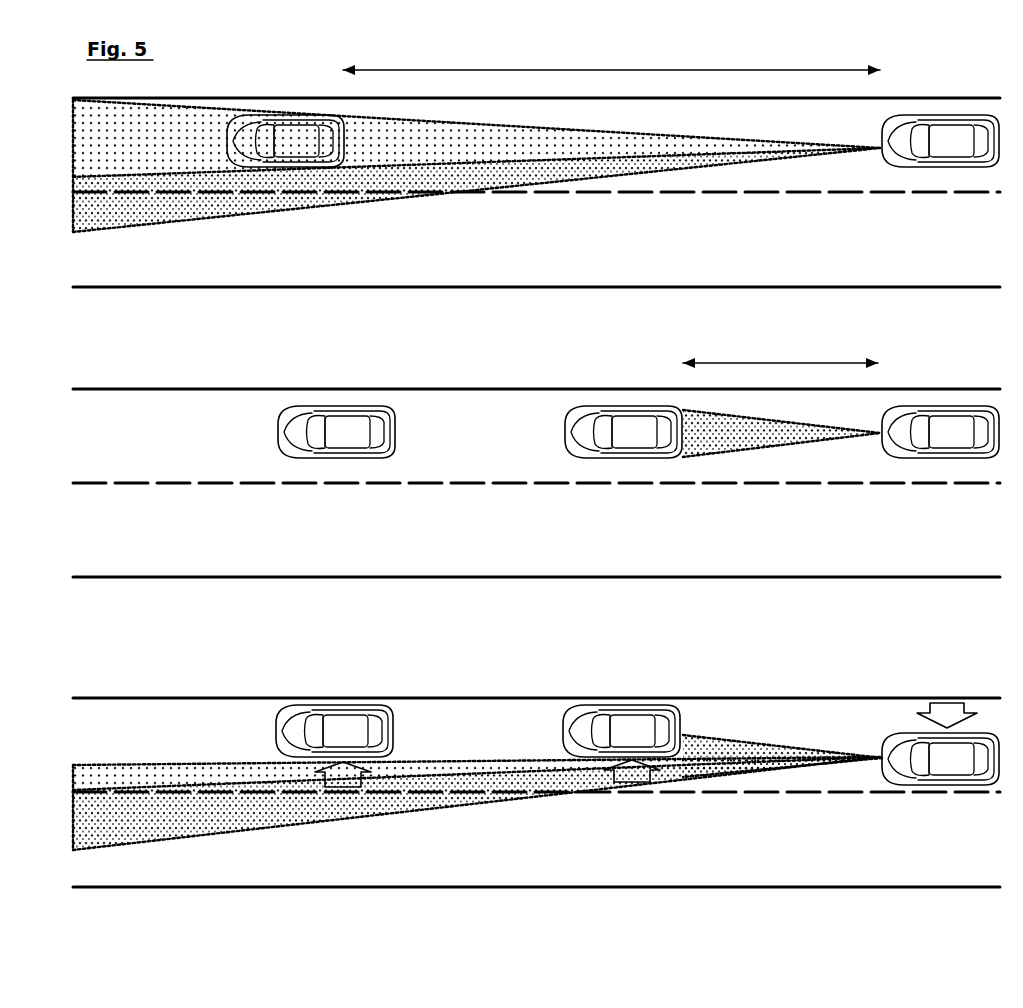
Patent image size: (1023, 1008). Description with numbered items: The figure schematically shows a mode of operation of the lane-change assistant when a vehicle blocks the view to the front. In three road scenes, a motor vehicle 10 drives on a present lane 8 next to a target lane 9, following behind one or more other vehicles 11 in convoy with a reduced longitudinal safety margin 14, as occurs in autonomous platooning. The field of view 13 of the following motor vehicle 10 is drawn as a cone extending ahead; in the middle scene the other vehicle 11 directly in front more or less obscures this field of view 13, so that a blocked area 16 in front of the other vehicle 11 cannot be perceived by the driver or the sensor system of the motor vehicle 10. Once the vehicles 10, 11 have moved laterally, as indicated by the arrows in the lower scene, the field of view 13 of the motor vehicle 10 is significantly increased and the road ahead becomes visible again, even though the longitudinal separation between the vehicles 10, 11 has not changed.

The present lane 8 is at (846, 129).
The target lane 9 is at (644, 266).
The motor vehicle 10 is at (878, 158).
The other vehicle 11 is at (225, 149).
The field of view 13 is at (462, 154).
The reduced longitudinal safety margin 14 is at (489, 69).
The blocked area 16 is at (117, 149).